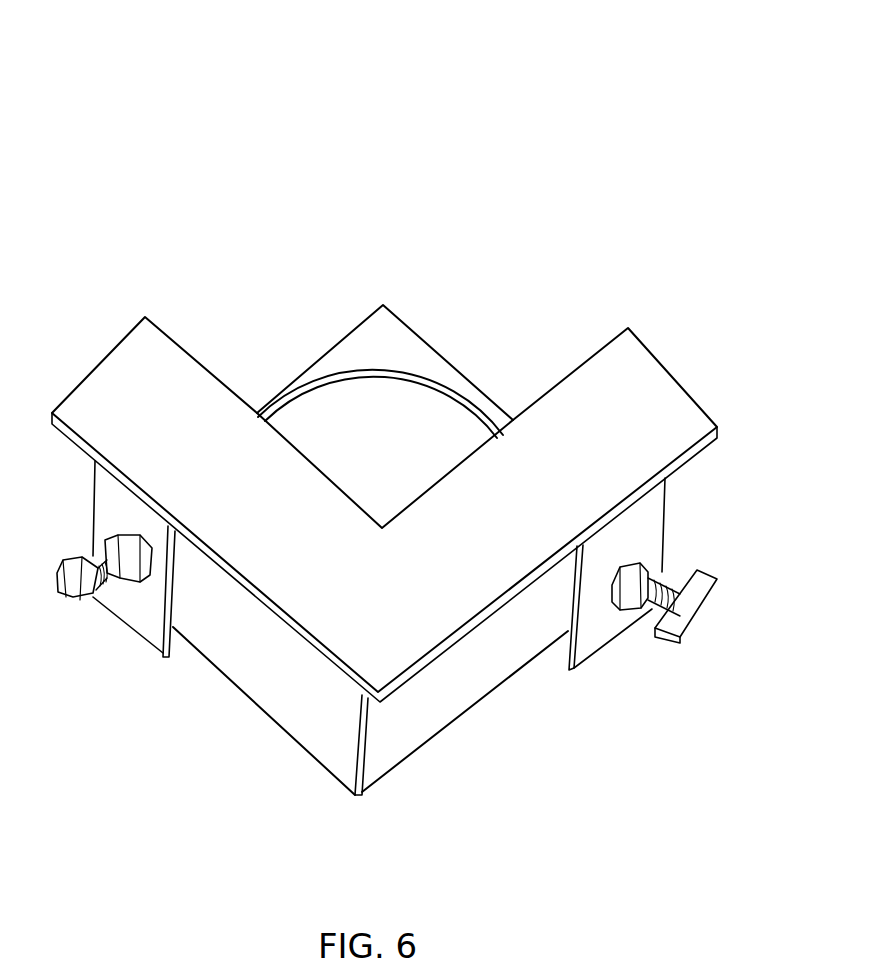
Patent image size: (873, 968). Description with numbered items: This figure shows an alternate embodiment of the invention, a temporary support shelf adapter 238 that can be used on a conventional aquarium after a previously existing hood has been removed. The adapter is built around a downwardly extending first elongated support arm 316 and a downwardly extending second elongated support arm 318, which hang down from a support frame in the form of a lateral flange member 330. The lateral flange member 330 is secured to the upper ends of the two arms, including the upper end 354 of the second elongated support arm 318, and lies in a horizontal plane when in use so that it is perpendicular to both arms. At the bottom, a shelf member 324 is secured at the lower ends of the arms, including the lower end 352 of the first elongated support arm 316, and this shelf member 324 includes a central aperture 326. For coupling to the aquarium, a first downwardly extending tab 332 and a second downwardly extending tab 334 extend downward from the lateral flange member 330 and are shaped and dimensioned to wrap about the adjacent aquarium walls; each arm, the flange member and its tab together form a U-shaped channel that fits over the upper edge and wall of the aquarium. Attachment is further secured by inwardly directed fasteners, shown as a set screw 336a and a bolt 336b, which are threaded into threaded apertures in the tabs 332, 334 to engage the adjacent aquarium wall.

The support shelf adapter 238 is at (362, 260).
The lateral flange member 330 is at (384, 380).
The shelf member 324 is at (290, 385).
The central aperture 326 is at (437, 375).
The first downwardly extending tab 332 is at (692, 440).
The second downwardly extending tab 334 is at (96, 636).
The set screw 336a is at (680, 572).
The bolt 336b is at (88, 600).
The first elongated support arm 316 is at (484, 769).
The second elongated support arm 318 is at (249, 780).
The lower end of first elongated support arm 352 is at (388, 773).
The upper end of second elongated support arm 354 is at (303, 750).